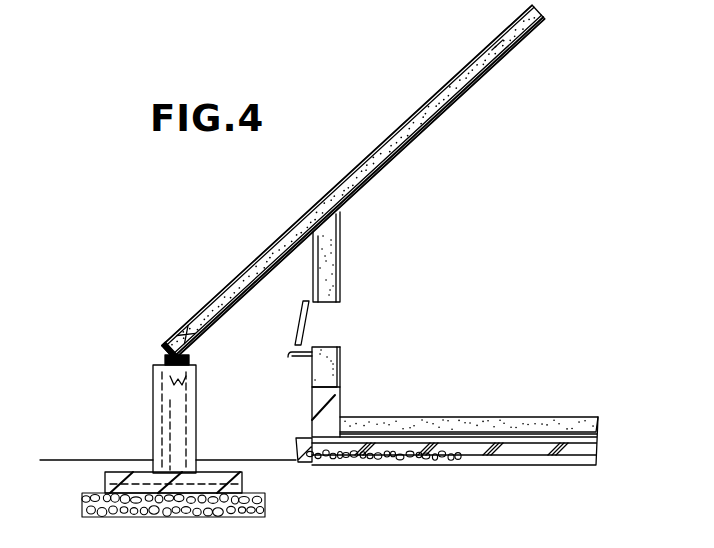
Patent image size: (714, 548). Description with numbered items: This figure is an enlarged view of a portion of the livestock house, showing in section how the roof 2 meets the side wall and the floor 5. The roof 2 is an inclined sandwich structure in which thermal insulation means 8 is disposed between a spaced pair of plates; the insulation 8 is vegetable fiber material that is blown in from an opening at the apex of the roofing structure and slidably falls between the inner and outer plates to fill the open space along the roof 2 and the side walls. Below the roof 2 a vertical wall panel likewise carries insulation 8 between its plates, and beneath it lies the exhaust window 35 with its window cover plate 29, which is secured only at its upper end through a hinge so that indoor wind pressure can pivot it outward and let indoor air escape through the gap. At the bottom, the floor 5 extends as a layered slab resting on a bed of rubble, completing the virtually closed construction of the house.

The roof 2 is at (353, 182).
The floor 5 is at (510, 418).
The thermal insulation means 8 is at (352, 176).
The window cover plate 29 is at (298, 345).
The exhaust window 35 is at (325, 330).